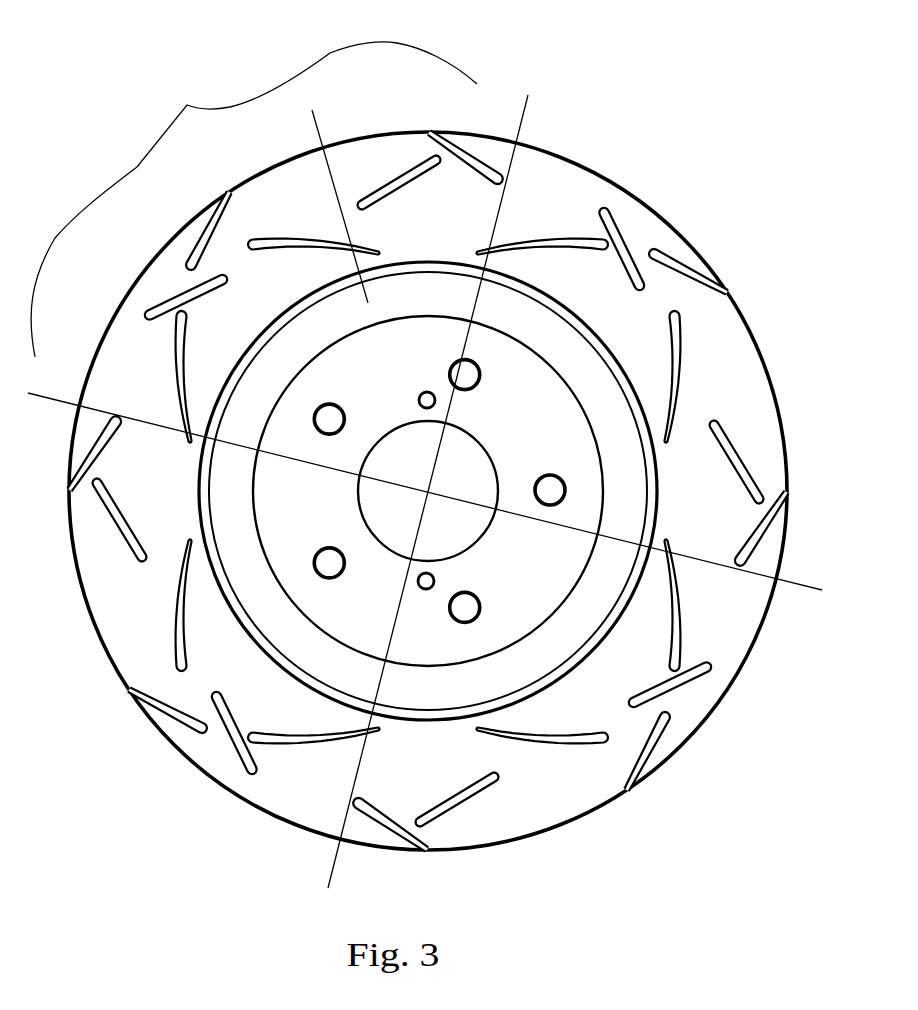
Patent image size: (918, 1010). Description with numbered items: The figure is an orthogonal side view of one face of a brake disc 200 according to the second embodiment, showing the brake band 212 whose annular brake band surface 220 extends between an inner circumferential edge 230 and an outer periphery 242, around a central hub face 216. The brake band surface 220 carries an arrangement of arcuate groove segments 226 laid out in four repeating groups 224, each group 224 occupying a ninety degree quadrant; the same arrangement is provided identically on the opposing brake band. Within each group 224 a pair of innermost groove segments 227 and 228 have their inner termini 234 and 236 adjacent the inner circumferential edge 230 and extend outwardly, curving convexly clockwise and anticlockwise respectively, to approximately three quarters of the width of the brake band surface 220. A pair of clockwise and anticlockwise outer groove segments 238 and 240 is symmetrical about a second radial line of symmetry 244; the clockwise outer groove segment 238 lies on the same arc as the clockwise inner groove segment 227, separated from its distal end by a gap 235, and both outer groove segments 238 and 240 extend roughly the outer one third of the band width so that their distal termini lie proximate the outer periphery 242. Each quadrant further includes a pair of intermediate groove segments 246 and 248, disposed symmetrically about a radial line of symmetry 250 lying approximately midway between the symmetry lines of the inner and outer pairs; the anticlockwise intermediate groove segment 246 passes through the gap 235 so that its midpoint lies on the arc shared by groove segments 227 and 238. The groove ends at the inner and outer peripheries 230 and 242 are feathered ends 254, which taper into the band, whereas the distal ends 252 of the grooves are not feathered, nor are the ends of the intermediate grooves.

The brake rotor 200 is at (708, 104).
The brake band 212 is at (716, 268).
The hub mounting face 216 is at (428, 491).
The brake band surface 220 is at (442, 757).
The repeating group of groove segments 224 is at (254, 199).
The groove segments 226 is at (437, 491).
The clockwise inner groove segment 227 is at (143, 390).
The anticlockwise inner groove segment 228 is at (354, 260).
The inner circumferential edge 230 is at (194, 488).
The inner terminus 234 is at (182, 441).
The gap 235 is at (182, 280).
The inner terminus 236 is at (384, 248).
The clockwise outer groove segment 238 is at (213, 232).
The anticlockwise outer groove segment 240 is at (465, 163).
The outer periphery 242 is at (436, 491).
The second radial line of symmetry 244 is at (315, 123).
The anticlockwise intermediate groove segment 246 is at (165, 299).
The clockwise intermediate groove segment 248 is at (390, 187).
The radial line of symmetry 250 is at (333, 317).
The distal ends 252 is at (287, 352).
The feathered ends 254 is at (674, 538).